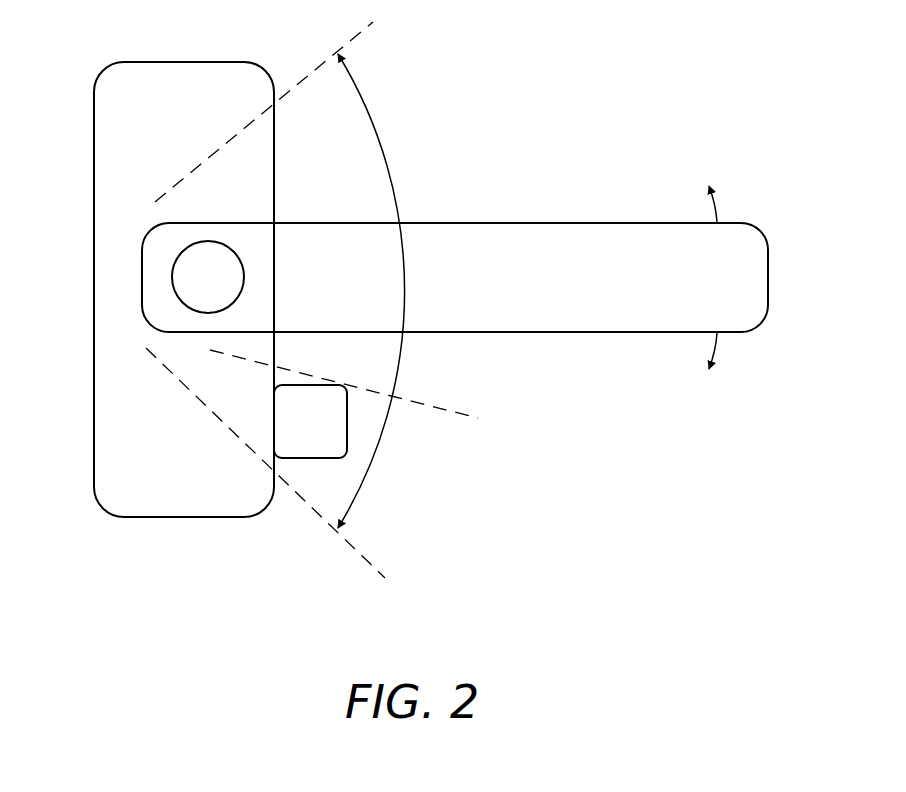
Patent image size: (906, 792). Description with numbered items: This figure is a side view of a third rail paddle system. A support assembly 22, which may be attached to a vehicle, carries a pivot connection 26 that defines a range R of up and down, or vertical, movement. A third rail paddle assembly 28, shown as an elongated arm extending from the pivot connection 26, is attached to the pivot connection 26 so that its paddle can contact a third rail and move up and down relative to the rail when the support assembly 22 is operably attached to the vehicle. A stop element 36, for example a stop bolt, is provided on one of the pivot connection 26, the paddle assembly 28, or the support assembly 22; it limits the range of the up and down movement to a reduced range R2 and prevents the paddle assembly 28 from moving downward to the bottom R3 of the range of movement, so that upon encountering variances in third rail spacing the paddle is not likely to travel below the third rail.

The support assembly 22 is at (185, 518).
The pivot connection 26 is at (192, 277).
The third rail paddle assembly 28 is at (630, 232).
The stop element 36 is at (295, 442).
The range of up and down movement R is at (382, 135).
The limited range of up and down movement R2 is at (450, 410).
The bottom of the range of movement R3 is at (363, 558).